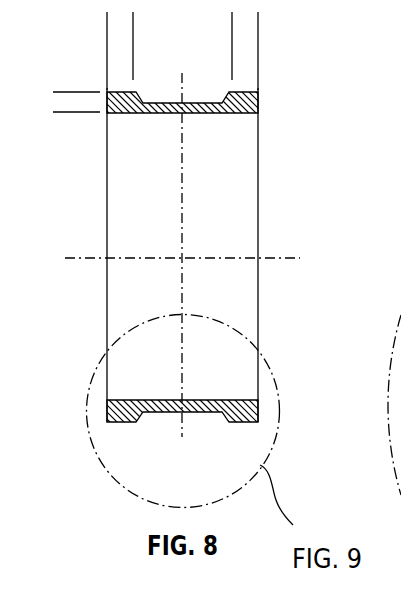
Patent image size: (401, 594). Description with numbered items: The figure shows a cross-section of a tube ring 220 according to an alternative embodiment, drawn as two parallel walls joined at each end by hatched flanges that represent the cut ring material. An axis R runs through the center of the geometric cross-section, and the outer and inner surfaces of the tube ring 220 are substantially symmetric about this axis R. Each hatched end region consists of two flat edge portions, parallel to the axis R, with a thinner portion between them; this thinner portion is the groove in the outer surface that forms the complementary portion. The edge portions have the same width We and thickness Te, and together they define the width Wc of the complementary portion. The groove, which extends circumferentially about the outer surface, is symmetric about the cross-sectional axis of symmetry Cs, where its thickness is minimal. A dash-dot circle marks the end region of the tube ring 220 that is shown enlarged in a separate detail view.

The tube ring 220 is at (288, 146).
The width of the edge portions We is at (105, 38).
The width of the complementary portion Wc is at (230, 38).
The thickness of the edge portions Te is at (77, 70).
The axis R is at (182, 259).
The cross-sectional axis of symmetry Cs is at (183, 411).